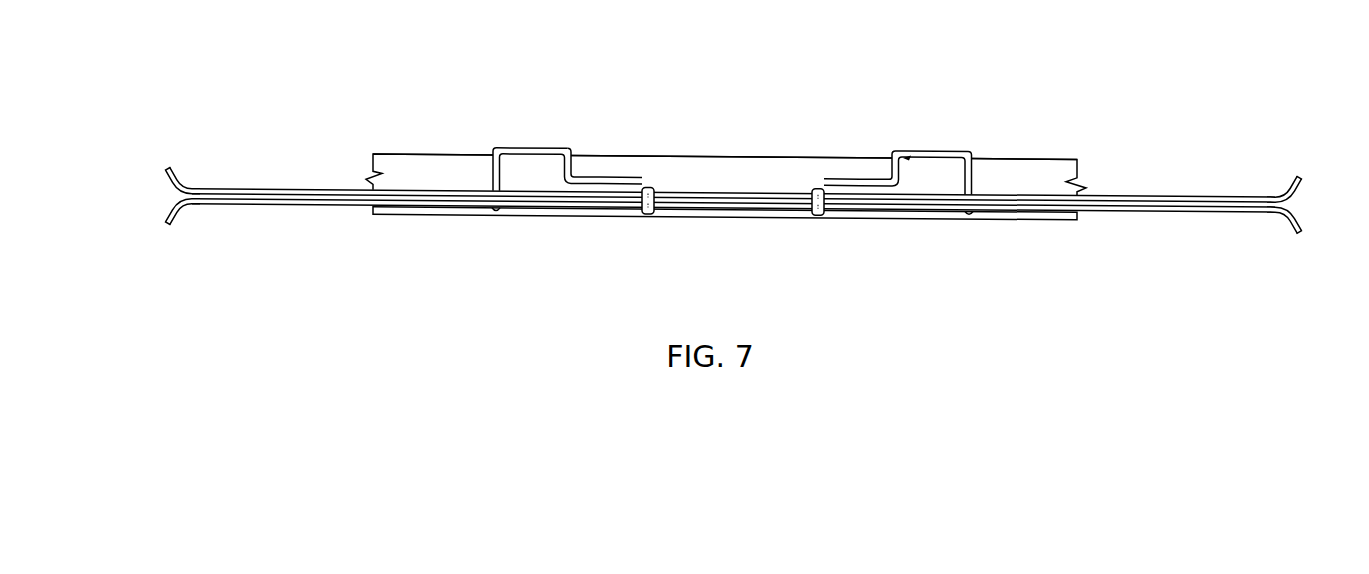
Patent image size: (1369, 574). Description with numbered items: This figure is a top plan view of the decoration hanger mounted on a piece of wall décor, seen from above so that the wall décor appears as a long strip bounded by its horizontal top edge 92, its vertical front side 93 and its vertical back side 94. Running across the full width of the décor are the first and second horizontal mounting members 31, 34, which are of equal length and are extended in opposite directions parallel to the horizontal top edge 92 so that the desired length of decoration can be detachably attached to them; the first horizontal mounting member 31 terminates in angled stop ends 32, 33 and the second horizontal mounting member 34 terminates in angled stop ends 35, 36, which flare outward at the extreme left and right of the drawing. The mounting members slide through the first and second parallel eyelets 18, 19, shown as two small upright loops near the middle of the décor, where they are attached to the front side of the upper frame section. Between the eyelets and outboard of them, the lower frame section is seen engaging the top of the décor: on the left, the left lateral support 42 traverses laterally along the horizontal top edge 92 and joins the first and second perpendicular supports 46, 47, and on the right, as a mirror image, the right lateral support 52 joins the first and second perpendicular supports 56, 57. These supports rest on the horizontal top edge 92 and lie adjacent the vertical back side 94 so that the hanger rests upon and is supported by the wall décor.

The first parallel eyelet 18 is at (636, 206).
The second parallel eyelet 19 is at (832, 208).
The first horizontal mounting member 31 is at (313, 208).
The angled stop end 32 is at (168, 219).
The angled stop end 33 is at (1295, 226).
The second horizontal mounting member 34 is at (294, 189).
The angled stop end 35 is at (170, 171).
The angled stop end 36 is at (1302, 176).
The left lateral support 42 is at (630, 156).
The first perpendicular support 46 is at (590, 156).
The second perpendicular support 47 is at (469, 160).
The right lateral support 52 is at (840, 172).
The first perpendicular support 56 is at (893, 167).
The second perpendicular support 57 is at (997, 168).
The horizontal top edge 92 is at (413, 163).
The vertical front side 93 is at (442, 217).
The vertical back side 94 is at (451, 163).